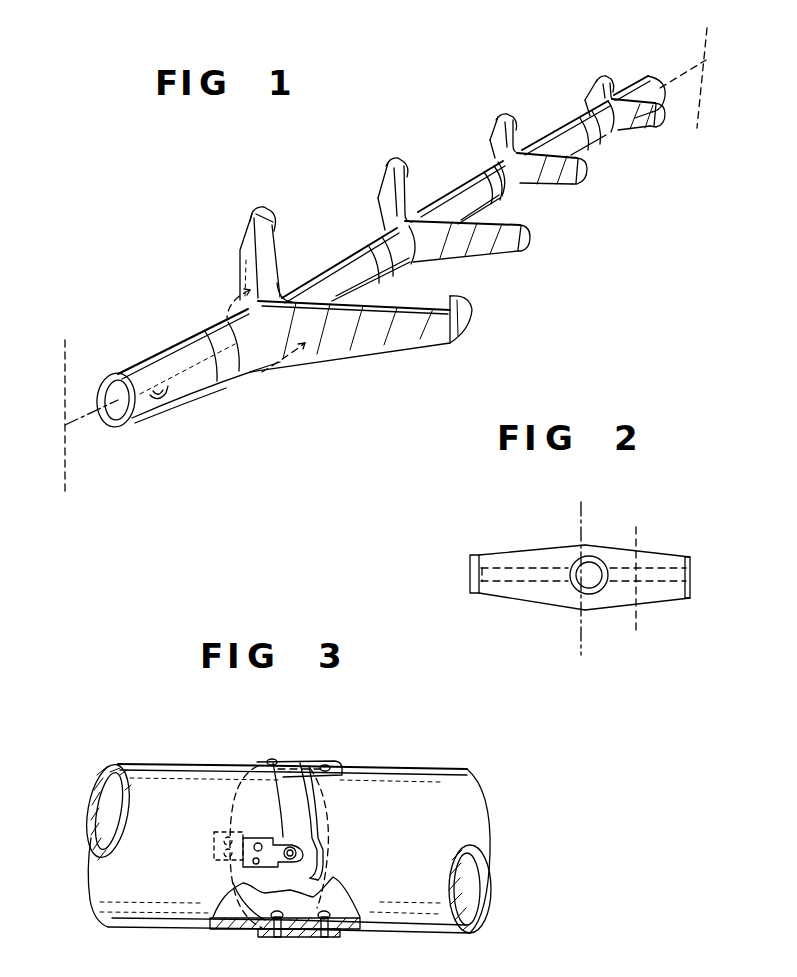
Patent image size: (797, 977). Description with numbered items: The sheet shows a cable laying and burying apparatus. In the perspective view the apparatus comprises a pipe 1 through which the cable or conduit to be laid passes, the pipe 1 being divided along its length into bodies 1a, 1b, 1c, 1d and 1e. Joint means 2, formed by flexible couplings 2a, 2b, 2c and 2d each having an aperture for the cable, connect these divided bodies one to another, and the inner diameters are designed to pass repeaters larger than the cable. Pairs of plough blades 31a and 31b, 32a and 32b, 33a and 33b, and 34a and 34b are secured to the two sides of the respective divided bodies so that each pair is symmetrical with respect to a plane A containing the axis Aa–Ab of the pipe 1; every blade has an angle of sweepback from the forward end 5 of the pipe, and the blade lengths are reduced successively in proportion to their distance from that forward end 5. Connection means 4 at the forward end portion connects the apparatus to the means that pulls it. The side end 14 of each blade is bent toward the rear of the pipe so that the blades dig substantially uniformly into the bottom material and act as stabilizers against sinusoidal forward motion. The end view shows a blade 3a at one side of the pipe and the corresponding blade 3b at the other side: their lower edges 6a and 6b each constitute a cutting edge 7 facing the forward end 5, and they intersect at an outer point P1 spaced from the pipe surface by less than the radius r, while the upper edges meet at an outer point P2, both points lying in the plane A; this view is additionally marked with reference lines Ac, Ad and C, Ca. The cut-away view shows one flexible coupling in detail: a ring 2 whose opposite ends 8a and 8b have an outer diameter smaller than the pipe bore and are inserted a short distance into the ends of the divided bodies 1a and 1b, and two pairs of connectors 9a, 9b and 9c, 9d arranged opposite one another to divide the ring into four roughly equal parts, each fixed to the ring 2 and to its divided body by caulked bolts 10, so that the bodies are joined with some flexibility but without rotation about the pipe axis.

In FIG. 1, the pipe 1 is at (200, 387).
In FIG. 1, the divided body 1a is at (162, 364).
In FIG. 3, the divided body 1a is at (152, 915).
In FIG. 1, the divided body 1b is at (320, 278).
In FIG. 3, the divided body 1b is at (432, 790).
In FIG. 1, the divided body 1c is at (452, 212).
In FIG. 1, the divided body 1d is at (558, 140).
In FIG. 1, the divided body 1e is at (646, 90).
In FIG. 3, the joint means 2 is at (288, 787).
In FIG. 1, the flexible coupling 2a is at (233, 373).
In FIG. 1, the flexible coupling 2b is at (386, 270).
In FIG. 1, the flexible coupling 2c is at (503, 193).
In FIG. 1, the flexible coupling 2d is at (592, 147).
In FIG. 2, the plough blade 3a is at (507, 555).
In FIG. 2, the plough blade 3b is at (664, 556).
In FIG. 1, the connection means 4 is at (165, 402).
In FIG. 1, the forward end 5 is at (110, 380).
In FIG. 1, the lower edge 6a is at (241, 258).
In FIG. 2, the lower edge 6a is at (517, 601).
In FIG. 1, the lower edge 6b is at (378, 358).
In FIG. 2, the lower edge 6b is at (646, 601).
In FIG. 1, the cutting edge 7 is at (415, 358).
In FIG. 2, the cutting edge 7 is at (486, 597).
In FIG. 3, the ring end 8a is at (238, 813).
In FIG. 3, the ring end 8b is at (328, 817).
In FIG. 3, the connector 9a is at (315, 762).
In FIG. 3, the connector 9b is at (300, 938).
In FIG. 3, the connector 9c is at (214, 848).
In FIG. 3, the connector 9d is at (290, 843).
In FIG. 3, the bolt 10 is at (246, 862).
In FIG. 1, the bent side end 14 is at (469, 318).
In FIG. 1, the plough blade 31a is at (250, 228).
In FIG. 1, the plough blade 31b is at (438, 340).
In FIG. 1, the plough blade 32a is at (378, 200).
In FIG. 1, the plough blade 32b is at (514, 249).
In FIG. 1, the plough blade 33a is at (495, 145).
In FIG. 1, the plough blade 33b is at (573, 184).
In FIG. 1, the plough blade 34a is at (595, 100).
In FIG. 1, the plough blade 34b is at (650, 127).
In FIG. 1, the plane of symmetry A is at (700, 56).
In FIG. 1, the pipe axis Aa is at (71, 425).
In FIG. 1, the pipe axis Ab is at (700, 70).
In FIG. 1, the axis Ac is at (46, 406).
In FIG. 2, the axis Ac is at (598, 573).
In FIG. 1, the axis Ad is at (46, 492).
In FIG. 2, the center line C is at (637, 560).
In FIG. 2, the center line Ca is at (642, 656).
In FIG. 2, the outer point P1 is at (585, 610).
In FIG. 2, the outer point P2 is at (584, 558).
In FIG. 2, the pipe radius r is at (585, 569).